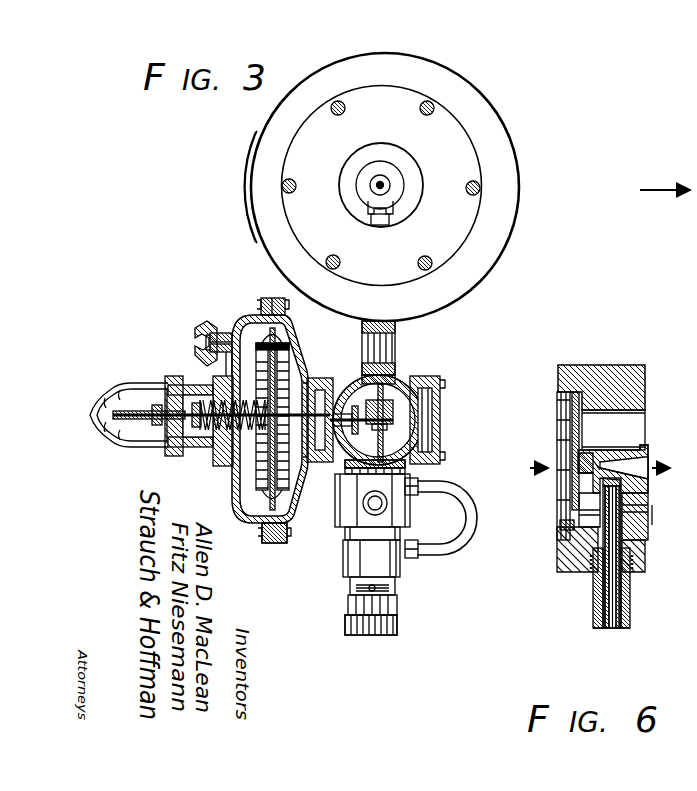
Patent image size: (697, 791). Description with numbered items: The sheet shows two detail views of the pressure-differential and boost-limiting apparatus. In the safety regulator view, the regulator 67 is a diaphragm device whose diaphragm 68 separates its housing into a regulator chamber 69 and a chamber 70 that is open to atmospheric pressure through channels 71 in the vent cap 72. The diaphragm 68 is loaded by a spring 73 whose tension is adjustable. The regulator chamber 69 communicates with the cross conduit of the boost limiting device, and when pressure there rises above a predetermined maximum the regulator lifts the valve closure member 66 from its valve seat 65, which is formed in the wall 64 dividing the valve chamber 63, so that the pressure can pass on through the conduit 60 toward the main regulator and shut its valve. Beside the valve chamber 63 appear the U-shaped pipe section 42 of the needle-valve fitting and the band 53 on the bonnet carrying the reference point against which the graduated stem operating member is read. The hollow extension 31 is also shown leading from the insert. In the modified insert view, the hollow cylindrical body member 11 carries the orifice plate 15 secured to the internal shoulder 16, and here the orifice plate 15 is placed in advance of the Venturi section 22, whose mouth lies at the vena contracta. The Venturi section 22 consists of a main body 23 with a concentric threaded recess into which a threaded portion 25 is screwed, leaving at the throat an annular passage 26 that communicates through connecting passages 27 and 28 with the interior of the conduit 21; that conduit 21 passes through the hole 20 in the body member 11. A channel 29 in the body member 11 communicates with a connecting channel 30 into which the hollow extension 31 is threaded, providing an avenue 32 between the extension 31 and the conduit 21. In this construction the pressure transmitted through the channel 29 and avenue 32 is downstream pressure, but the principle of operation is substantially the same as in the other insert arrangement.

In FIG. 3, the hollow cylindrical body member 11 is at (472, 100).
In FIG. 6, the hollow cylindrical body member 11 is at (600, 365).
In FIG. 3, the orifice plate 15 is at (393, 87).
In FIG. 6, the orifice plate 15 is at (560, 428).
In FIG. 3, the inserted Venturi section 22 is at (403, 177).
In FIG. 6, the inserted Venturi section 22 is at (650, 456).
In FIG. 3, the pipe or conduit 21 is at (392, 222).
In FIG. 6, the pipe or conduit 21 is at (630, 590).
In FIG. 3, the hollow extension 31 is at (396, 345).
In FIG. 6, the hollow extension 31 is at (593, 595).
In FIG. 3, the wall 64 is at (385, 400).
In FIG. 3, the valve seat 65 is at (432, 386).
In FIG. 3, the regulator chamber 69 is at (310, 380).
In FIG. 3, the valve closure member 66 is at (356, 416).
In FIG. 3, the valve chamber 63 is at (420, 472).
In FIG. 3, the U-shaped pipe section 42 is at (480, 548).
In FIG. 3, the band 53 is at (397, 588).
In FIG. 3, the chamber 70 is at (252, 325).
In FIG. 3, the safety regulator 67 is at (230, 485).
In FIG. 3, the diaphragm 68 is at (258, 528).
In FIG. 3, the vent cap 72 is at (207, 324).
In FIG. 3, the channels 71 is at (214, 333).
In FIG. 3, the spring 73 is at (212, 402).
In FIG. 6, the threaded portion 25 is at (578, 450).
In FIG. 6, the internal shoulder 16 is at (586, 418).
In FIG. 6, the main body 23 is at (613, 459).
In FIG. 6, the annular passage 26 is at (603, 458).
In FIG. 6, the connecting passage 27 is at (612, 471).
In FIG. 6, the connecting passage 28 is at (636, 513).
In FIG. 6, the conduit 60 is at (674, 518).
In FIG. 6, the hole 20 is at (578, 508).
In FIG. 6, the connecting channel 30 is at (590, 560).
In FIG. 6, the channel 29 is at (632, 548).
In FIG. 6, the avenue 32 is at (630, 620).